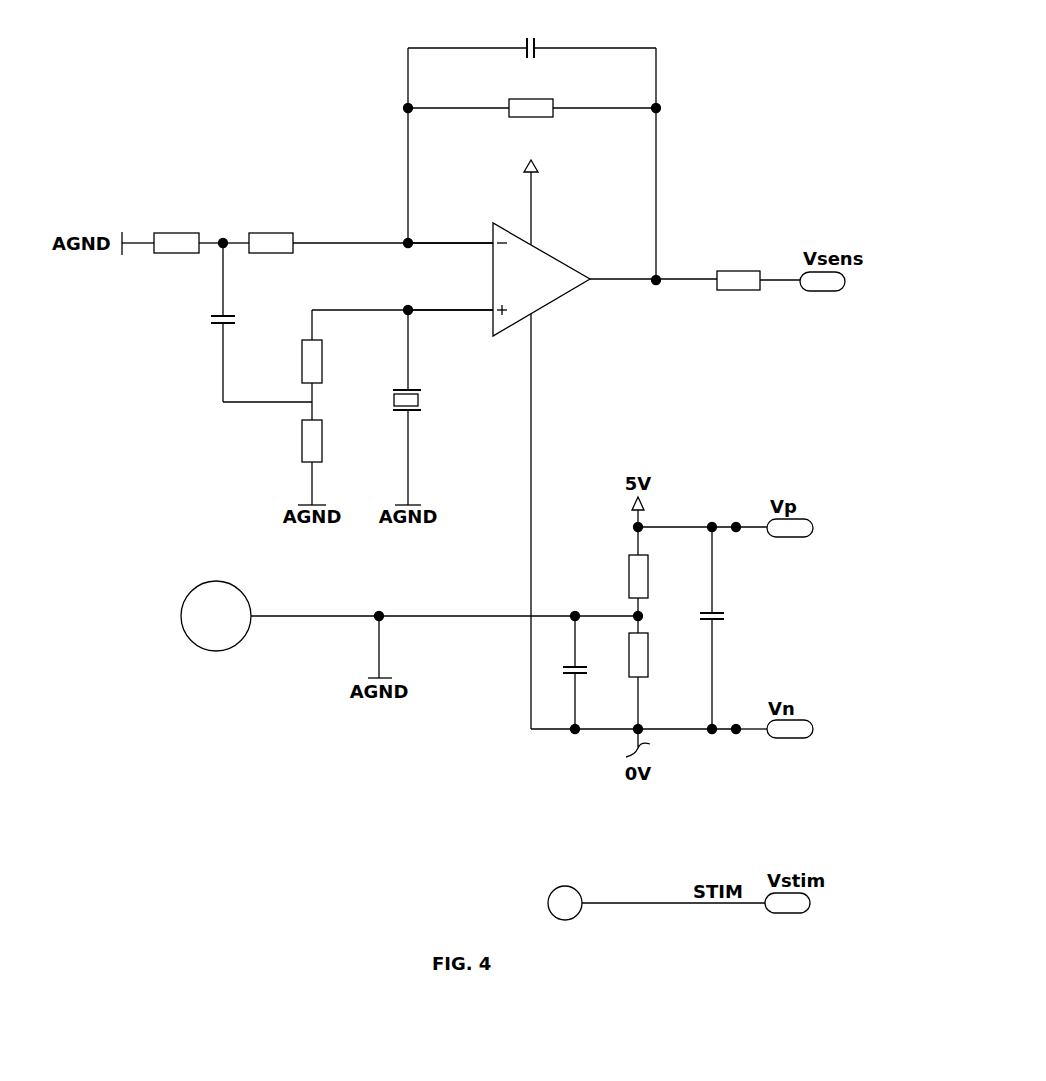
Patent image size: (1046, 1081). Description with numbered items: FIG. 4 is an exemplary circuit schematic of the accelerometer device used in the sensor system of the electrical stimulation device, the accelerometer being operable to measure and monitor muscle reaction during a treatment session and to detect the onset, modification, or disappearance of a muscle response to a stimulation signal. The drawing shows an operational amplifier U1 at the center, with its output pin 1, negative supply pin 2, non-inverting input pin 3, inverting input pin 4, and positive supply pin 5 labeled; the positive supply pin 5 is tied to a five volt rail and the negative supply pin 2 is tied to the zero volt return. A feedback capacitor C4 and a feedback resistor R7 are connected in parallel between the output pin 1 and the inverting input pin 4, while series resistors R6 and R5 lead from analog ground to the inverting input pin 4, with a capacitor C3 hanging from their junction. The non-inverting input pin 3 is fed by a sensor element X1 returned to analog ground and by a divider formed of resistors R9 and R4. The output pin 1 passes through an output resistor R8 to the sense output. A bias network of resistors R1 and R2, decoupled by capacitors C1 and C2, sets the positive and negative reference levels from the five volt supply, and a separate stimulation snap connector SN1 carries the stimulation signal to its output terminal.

The feedback capacitor C4 is at (532, 37).
The feedback resistor R7 is at (532, 96).
The input resistor R6 is at (188, 231).
The input resistor R5 is at (358, 231).
The capacitor C3 is at (261, 322).
The resistor R9 is at (327, 365).
The resistor R4 is at (325, 462).
The crystal / sensor element X1 is at (391, 407).
The operational amplifier U1 is at (532, 433).
The output resistor R8 is at (728, 269).
The bias resistor R1 is at (654, 594).
The bias resistor R2 is at (654, 681).
The bias capacitor C1 is at (590, 672).
The bias capacitor C2 is at (727, 628).
The stim snap connector SN1 is at (656, 903).
The op amp output pin 1 is at (623, 267).
The op amp V- pin 2 is at (520, 521).
The op amp non-inverting input pin 3 is at (450, 299).
The op amp inverting input pin 4 is at (450, 233).
The op amp V+ pin 5 is at (529, 191).